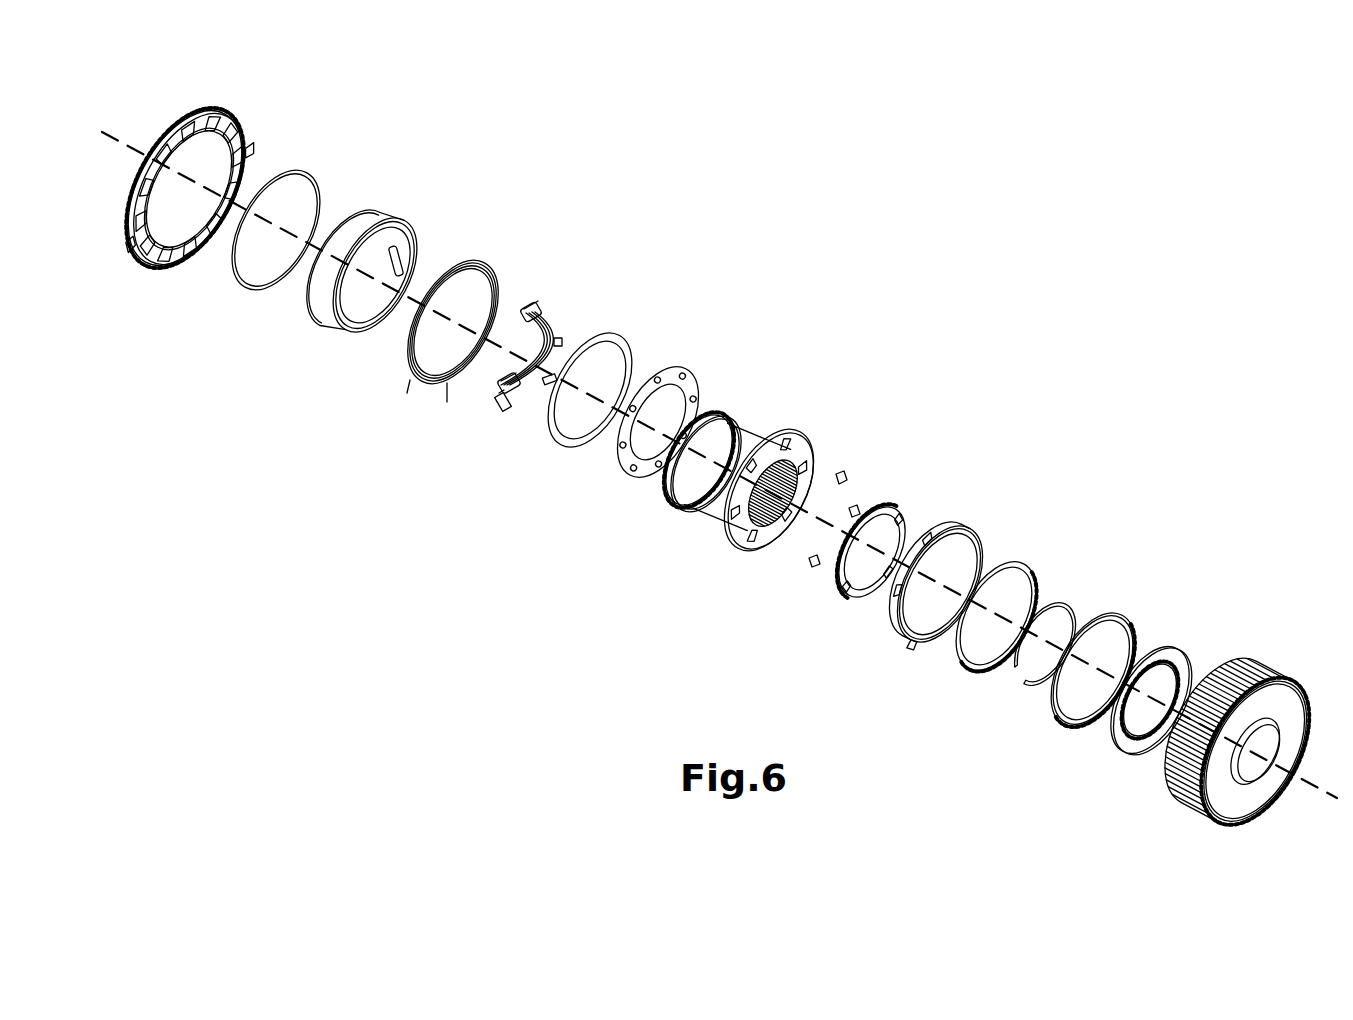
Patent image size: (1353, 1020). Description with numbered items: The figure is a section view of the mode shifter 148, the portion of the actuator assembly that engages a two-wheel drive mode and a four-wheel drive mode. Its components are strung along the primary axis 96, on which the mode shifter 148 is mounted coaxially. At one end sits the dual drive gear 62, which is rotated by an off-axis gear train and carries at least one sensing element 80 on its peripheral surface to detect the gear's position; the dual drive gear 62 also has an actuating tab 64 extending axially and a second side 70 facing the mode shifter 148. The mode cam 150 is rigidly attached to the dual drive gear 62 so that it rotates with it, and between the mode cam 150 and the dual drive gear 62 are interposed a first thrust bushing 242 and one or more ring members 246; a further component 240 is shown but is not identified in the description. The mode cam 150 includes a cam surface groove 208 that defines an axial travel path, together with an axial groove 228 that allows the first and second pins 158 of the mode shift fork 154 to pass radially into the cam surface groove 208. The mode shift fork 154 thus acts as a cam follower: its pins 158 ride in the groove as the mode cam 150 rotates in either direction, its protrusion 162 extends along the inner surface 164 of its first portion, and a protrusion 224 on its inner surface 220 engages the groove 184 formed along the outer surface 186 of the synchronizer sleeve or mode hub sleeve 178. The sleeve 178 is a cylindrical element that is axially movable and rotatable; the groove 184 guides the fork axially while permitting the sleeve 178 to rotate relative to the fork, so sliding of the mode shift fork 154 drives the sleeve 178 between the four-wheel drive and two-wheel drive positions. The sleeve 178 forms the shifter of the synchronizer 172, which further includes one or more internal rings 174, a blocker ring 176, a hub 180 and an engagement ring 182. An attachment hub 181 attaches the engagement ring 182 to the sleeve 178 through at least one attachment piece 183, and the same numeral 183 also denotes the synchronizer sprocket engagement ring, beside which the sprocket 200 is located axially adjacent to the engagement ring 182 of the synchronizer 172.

The mode shifter 148 is at (856, 323).
The sensing element 80 is at (209, 117).
The dual drive gear 62 is at (227, 120).
The second side 70 is at (242, 152).
The dual drive gear actuating tab 64 is at (130, 243).
The first thrust bushing 242 is at (296, 175).
The ring members 246 is at (260, 284).
The mode cam 150 is at (358, 213).
The cam surface groove 208 is at (396, 222).
The axial groove 228 is at (356, 344).
The wave spring 240 is at (462, 258).
The primary axis 96 is at (520, 305).
The mode shift fork 154 is at (556, 338).
The first and second pins 158 is at (533, 308).
The inner surface 164 is at (502, 388).
The protrusion 162 is at (520, 386).
The protrusion 224 is at (558, 345).
The inner surface 220 is at (592, 336).
The outer surface 186 is at (728, 420).
The groove 184 is at (742, 432).
The synchronizer sleeve or mode hub sleeve 178 is at (756, 442).
The synchronizer 172 is at (979, 458).
The attachment pieces 183 is at (838, 475).
The engagement ring 182 is at (897, 505).
The attachment hub 181 is at (908, 622).
The blocker ring 176 is at (1021, 565).
The internal rings 174 is at (1061, 602).
The hub 180 is at (1107, 622).
The sprocket 200 is at (1258, 665).